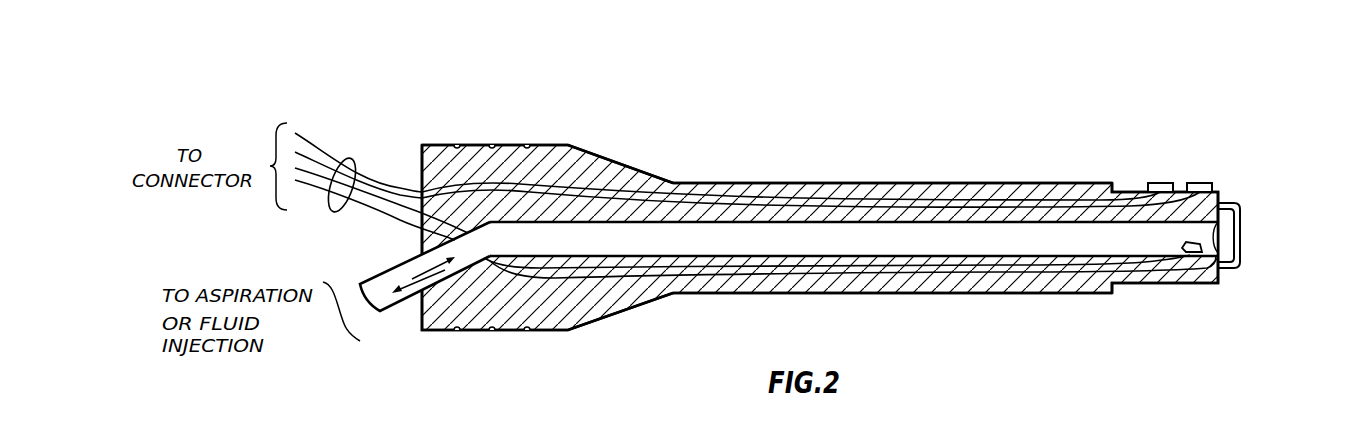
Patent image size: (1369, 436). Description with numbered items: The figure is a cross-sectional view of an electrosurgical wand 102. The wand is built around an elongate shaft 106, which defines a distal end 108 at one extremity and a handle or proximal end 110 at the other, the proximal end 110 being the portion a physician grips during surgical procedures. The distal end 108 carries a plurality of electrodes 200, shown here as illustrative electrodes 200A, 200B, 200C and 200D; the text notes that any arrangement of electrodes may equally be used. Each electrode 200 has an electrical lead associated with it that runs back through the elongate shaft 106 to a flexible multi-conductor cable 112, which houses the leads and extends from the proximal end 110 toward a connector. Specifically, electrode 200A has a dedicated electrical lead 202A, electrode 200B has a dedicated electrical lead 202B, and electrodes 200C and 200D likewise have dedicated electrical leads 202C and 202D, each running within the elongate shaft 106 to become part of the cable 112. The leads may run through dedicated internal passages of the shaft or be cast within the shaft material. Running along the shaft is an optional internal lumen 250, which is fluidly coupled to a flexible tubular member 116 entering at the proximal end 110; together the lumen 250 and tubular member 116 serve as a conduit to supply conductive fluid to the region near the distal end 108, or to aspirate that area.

The electrosurgical wand 102 is at (1072, 101).
The elongate shaft 106 is at (847, 183).
The distal end 108 is at (1168, 107).
The proximal end 110 is at (558, 145).
The flexible multi-conductor cable 112 is at (351, 160).
The flexible tubular member 116 is at (393, 310).
The electrodes 200 is at (1256, 174).
The electrode 200A is at (1160, 183).
The electrode 200B is at (1205, 183).
The electrode 200C is at (1240, 218).
The electrode 200D is at (1258, 237).
The electrical lead 202A is at (912, 198).
The electrical lead 202B is at (1008, 205).
The electrical lead 202C is at (1207, 268).
The electrical lead 202D is at (1145, 262).
The internal lumen 250 is at (832, 247).